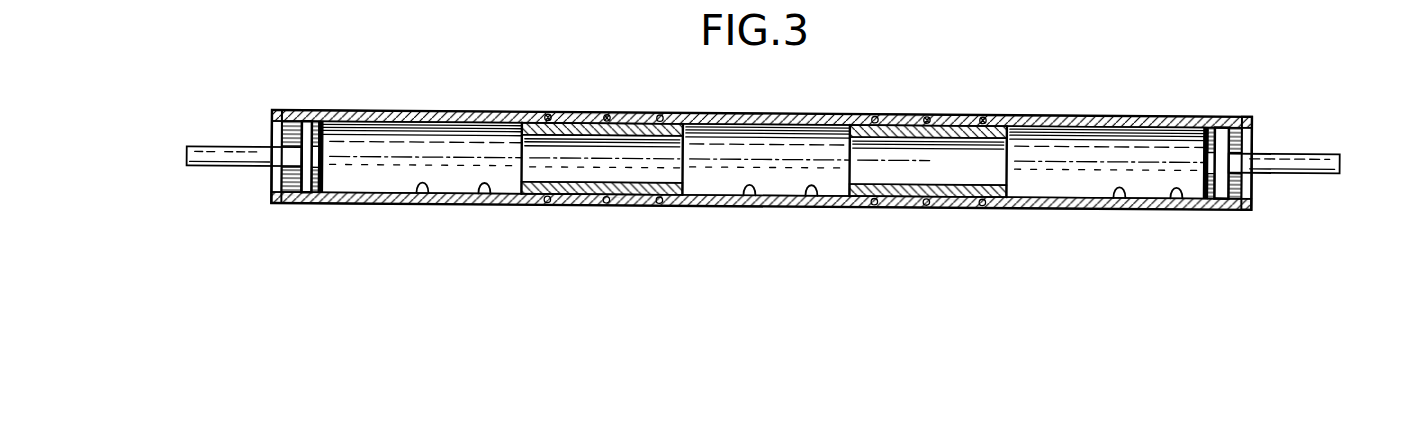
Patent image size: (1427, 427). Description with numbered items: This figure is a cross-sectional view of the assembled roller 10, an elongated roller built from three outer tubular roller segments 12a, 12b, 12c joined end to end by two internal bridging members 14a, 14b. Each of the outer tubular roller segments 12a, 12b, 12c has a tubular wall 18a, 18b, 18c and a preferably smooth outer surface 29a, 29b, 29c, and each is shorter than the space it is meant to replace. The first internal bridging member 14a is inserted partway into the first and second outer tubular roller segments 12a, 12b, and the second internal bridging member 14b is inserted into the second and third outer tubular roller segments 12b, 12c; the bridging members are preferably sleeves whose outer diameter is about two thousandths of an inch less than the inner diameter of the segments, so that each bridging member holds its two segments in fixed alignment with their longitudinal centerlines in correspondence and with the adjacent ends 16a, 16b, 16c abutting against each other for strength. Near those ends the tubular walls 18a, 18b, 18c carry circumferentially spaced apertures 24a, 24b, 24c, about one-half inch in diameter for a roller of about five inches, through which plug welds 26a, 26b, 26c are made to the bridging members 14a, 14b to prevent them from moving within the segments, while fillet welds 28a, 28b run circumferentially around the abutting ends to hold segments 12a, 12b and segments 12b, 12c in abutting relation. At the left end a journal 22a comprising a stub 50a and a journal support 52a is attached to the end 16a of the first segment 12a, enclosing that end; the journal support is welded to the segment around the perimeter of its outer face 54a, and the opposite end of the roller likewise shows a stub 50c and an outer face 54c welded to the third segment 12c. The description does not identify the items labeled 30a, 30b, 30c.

The roller 10 is at (1225, 112).
The first outer tubular roller segment 12a is at (372, 145).
The second outer tubular roller segment 12b is at (790, 145).
The third outer tubular roller segment 12c is at (1123, 145).
The first internal bridging member 14a is at (573, 160).
The second internal bridging member 14b is at (899, 162).
The end of first outer tubular roller segment 16a is at (605, 70).
The end of second outer tubular roller segment 16b is at (915, 113).
The end of third outer tubular roller segment 16c is at (1023, 225).
The tubular wall of first outer tubular roller segment 18a is at (487, 195).
The tubular wall of second outer tubular roller segment 18b is at (750, 196).
The tubular wall of third outer tubular roller segment 18c is at (1175, 198).
The journal 22a is at (270, 125).
The apertures 24a is at (520, 112).
The apertures 24b is at (674, 70).
The apertures 24c is at (928, 161).
The plug weld 26a is at (548, 112).
The plug weld 26b is at (742, 70).
The plug weld 26c is at (985, 113).
The fillet weld 28a is at (604, 112).
The fillet weld 28b is at (930, 113).
The outer surface 29a is at (364, 207).
The outer surface 29b is at (700, 207).
The outer surface 29c is at (1058, 208).
The roller 30a is at (425, 195).
The roller 30b is at (812, 197).
The roller 30c is at (1118, 198).
The stub 50a is at (196, 168).
The stub 50c is at (1340, 172).
The journal support 52a is at (305, 130).
The outer face 54a is at (272, 190).
The outer face 54c is at (1240, 140).